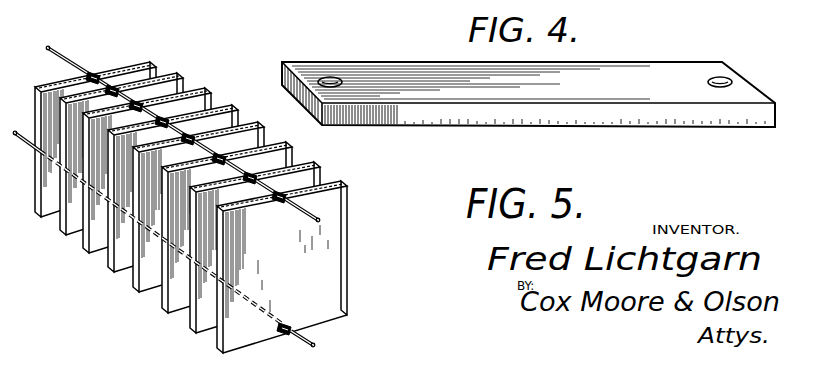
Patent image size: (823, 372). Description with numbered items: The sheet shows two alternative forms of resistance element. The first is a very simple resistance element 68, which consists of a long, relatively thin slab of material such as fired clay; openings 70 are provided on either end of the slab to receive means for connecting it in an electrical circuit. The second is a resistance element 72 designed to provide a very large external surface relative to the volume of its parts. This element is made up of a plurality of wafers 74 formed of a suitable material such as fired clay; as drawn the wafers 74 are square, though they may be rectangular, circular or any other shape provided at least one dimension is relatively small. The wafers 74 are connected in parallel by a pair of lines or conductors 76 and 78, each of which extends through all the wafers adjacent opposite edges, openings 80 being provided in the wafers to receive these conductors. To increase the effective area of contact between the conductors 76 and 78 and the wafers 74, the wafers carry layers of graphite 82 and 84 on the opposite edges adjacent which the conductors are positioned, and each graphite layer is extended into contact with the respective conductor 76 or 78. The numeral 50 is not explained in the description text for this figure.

In FIG. 5, the heat exchanger core 50 is at (196, 3).
In FIG. 4, the resistance element 68 is at (648, 65).
In FIG. 4, the openings 70 is at (332, 78).
In FIG. 5, the resistance element 72 is at (242, 187).
In FIG. 5, the wafers 74 is at (340, 241).
In FIG. 5, the conductor 76 is at (77, 67).
In FIG. 5, the conductor 78 is at (157, 238).
In FIG. 5, the openings 80 is at (284, 209).
In FIG. 5, the layer of graphite 82 is at (296, 195).
In FIG. 5, the layer of graphite 84 is at (287, 336).